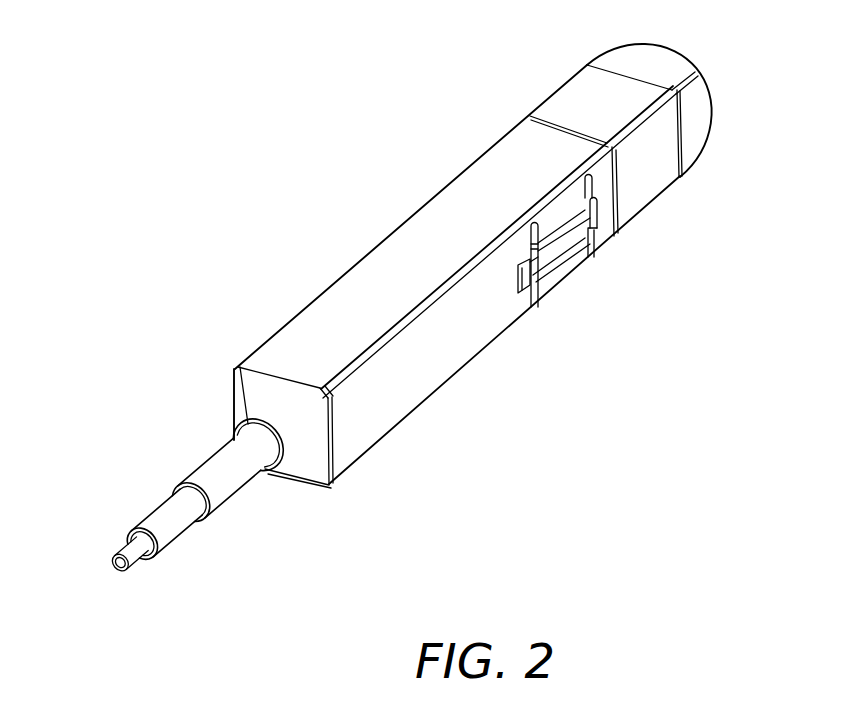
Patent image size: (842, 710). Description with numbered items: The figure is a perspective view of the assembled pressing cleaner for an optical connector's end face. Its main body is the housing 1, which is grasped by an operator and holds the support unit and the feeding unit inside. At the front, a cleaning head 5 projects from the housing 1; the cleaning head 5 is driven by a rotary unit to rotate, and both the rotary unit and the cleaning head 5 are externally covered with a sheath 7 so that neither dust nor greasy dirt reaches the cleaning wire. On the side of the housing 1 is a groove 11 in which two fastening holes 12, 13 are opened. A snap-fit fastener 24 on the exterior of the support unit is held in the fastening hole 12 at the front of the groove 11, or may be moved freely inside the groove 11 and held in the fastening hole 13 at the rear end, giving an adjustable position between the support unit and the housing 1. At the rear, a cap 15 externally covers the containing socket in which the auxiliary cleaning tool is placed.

The housing 1 is at (373, 270).
The cleaning head 5 is at (123, 548).
The sheath 7 is at (197, 468).
The groove 11 is at (570, 252).
The fastening hole 12 is at (535, 288).
The fastening hole 13 is at (595, 243).
The cap 15 is at (690, 143).
The snap-fit fastener 24 is at (553, 263).